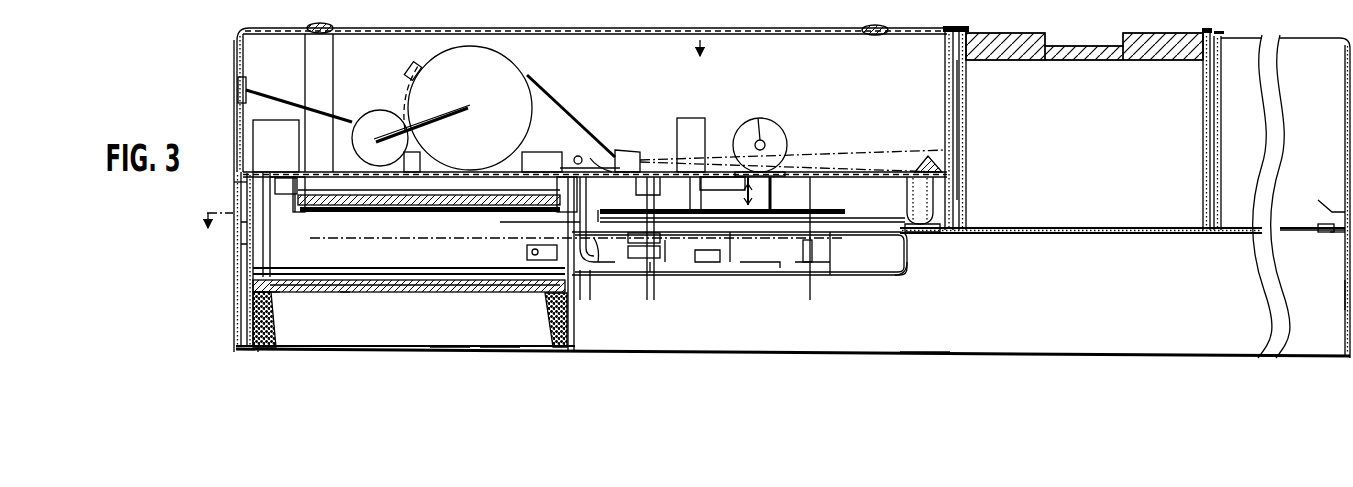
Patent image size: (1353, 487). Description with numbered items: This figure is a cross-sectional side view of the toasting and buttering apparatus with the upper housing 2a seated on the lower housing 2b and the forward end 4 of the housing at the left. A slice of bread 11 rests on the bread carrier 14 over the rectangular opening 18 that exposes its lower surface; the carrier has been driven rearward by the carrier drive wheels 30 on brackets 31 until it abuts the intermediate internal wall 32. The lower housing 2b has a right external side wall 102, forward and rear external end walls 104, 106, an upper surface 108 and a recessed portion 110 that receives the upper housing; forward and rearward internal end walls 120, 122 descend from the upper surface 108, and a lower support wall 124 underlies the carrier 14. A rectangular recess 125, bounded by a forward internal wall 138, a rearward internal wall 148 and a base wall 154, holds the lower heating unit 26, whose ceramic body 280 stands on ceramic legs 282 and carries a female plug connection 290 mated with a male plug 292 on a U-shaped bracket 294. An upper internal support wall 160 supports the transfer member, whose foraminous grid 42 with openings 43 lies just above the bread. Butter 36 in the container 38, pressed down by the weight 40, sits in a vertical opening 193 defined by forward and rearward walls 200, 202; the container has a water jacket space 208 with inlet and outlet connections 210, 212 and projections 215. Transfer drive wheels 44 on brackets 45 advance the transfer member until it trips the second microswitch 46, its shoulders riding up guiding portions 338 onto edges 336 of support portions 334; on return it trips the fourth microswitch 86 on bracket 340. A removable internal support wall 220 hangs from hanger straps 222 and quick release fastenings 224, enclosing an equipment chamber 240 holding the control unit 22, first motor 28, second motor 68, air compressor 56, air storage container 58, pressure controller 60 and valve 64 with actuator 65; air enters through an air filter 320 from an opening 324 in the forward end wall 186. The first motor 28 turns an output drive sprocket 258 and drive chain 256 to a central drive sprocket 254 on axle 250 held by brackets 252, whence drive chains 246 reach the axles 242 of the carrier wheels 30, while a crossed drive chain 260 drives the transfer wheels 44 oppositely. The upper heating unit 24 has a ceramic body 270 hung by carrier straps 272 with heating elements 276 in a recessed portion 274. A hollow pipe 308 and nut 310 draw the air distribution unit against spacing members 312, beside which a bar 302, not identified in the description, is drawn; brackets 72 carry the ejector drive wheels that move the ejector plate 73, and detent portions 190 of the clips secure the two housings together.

The upper housing 2a is at (236, 30).
The lower housing 2b is at (926, 360).
The forward end 4 is at (218, 210).
The slice of bread 11 is at (432, 293).
The bread carrier 14 is at (578, 276).
The rectangular opening 18 is at (700, 266).
The control unit 22 is at (262, 135).
The upper heating element 24 is at (278, 200).
The lower heating element 26 is at (337, 296).
The first electric motor 28 is at (775, 126).
The carrier drive wheels 30 is at (590, 280).
The brackets 31 is at (598, 212).
The intermediate internal wall 32 is at (907, 268).
The butter 36 is at (1186, 84).
The container 38 is at (968, 112).
The weight 40 is at (1020, 32).
The foraminous grid 42 is at (730, 262).
The openings 43 is at (666, 264).
The transfer drive wheels 44 is at (930, 233).
The brackets 45 is at (910, 193).
The second microswitch 46 is at (565, 223).
The air compressor 56 is at (372, 117).
The air storage container 58 is at (505, 65).
The pressure controller 60 is at (410, 67).
The valve 64 is at (627, 152).
The actuator 65 is at (640, 180).
The second reversible motor 68 is at (682, 118).
The brackets 72 is at (814, 251).
The ejector plate 73 is at (805, 272).
The fourth microswitch 86 is at (1318, 226).
The right external side wall 102 is at (812, 354).
The forward external end wall 104 is at (234, 286).
The rear external end wall 106 is at (1344, 294).
The upper surface 108 is at (237, 188).
The recessed portion 110 is at (242, 240).
The forward internal end wall 120 is at (248, 250).
The rearward internal end wall 122 is at (1338, 238).
The lower support wall 124 is at (762, 272).
The rectangular recess 125 is at (452, 352).
The forward internal wall 138 is at (263, 350).
The rearward internal wall 148 is at (576, 340).
The horizontal base wall 154 is at (497, 353).
The upper internal support wall 160 is at (1046, 237).
The forward end wall 186 is at (234, 60).
The detent portions 190 is at (238, 350).
The vertical opening 193 is at (955, 150).
The forward wall 200 is at (945, 110).
The rearward wall 202 is at (1220, 108).
The water jacket space 208 is at (963, 136).
The water inlet connection 210 is at (948, 26).
The water outlet connection 212 is at (1210, 30).
The projections 215 is at (1226, 31).
The internal support wall 220 is at (418, 176).
The hanger straps 222 is at (328, 58).
The quick release fastenings 224 is at (323, 24).
The equipment chamber 240 is at (702, 18).
The axle 242 is at (527, 253).
The drive chains 246 is at (562, 170).
The axle 250 is at (565, 163).
The brackets 252 is at (604, 142).
The central drive sprocket 254 is at (590, 162).
The drive chain 256 is at (720, 140).
The output drive sprocket 258 is at (756, 122).
The drive chain 260 is at (803, 150).
The ceramic body 270 is at (350, 194).
The carrier straps 272 is at (306, 185).
The recessed portion 274 is at (448, 186).
The electric resistance heating elements 276 is at (392, 214).
The ceramic body 280 is at (393, 292).
The ceramic legs 282 is at (273, 322).
The female plug connection 290 is at (273, 302).
The male plug 292 is at (268, 268).
The U-shaped bracket 294 is at (270, 226).
The bar 302 is at (840, 210).
The hollow pipe 308 is at (738, 191).
The nut 310 is at (706, 181).
The spacing members 312 is at (796, 193).
The air filter 320 is at (250, 86).
The opening 324 is at (237, 93).
The support portions 334 is at (597, 276).
The edge 336 is at (630, 240).
The guiding portion 338 is at (630, 252).
The bracket 340 is at (1338, 204).